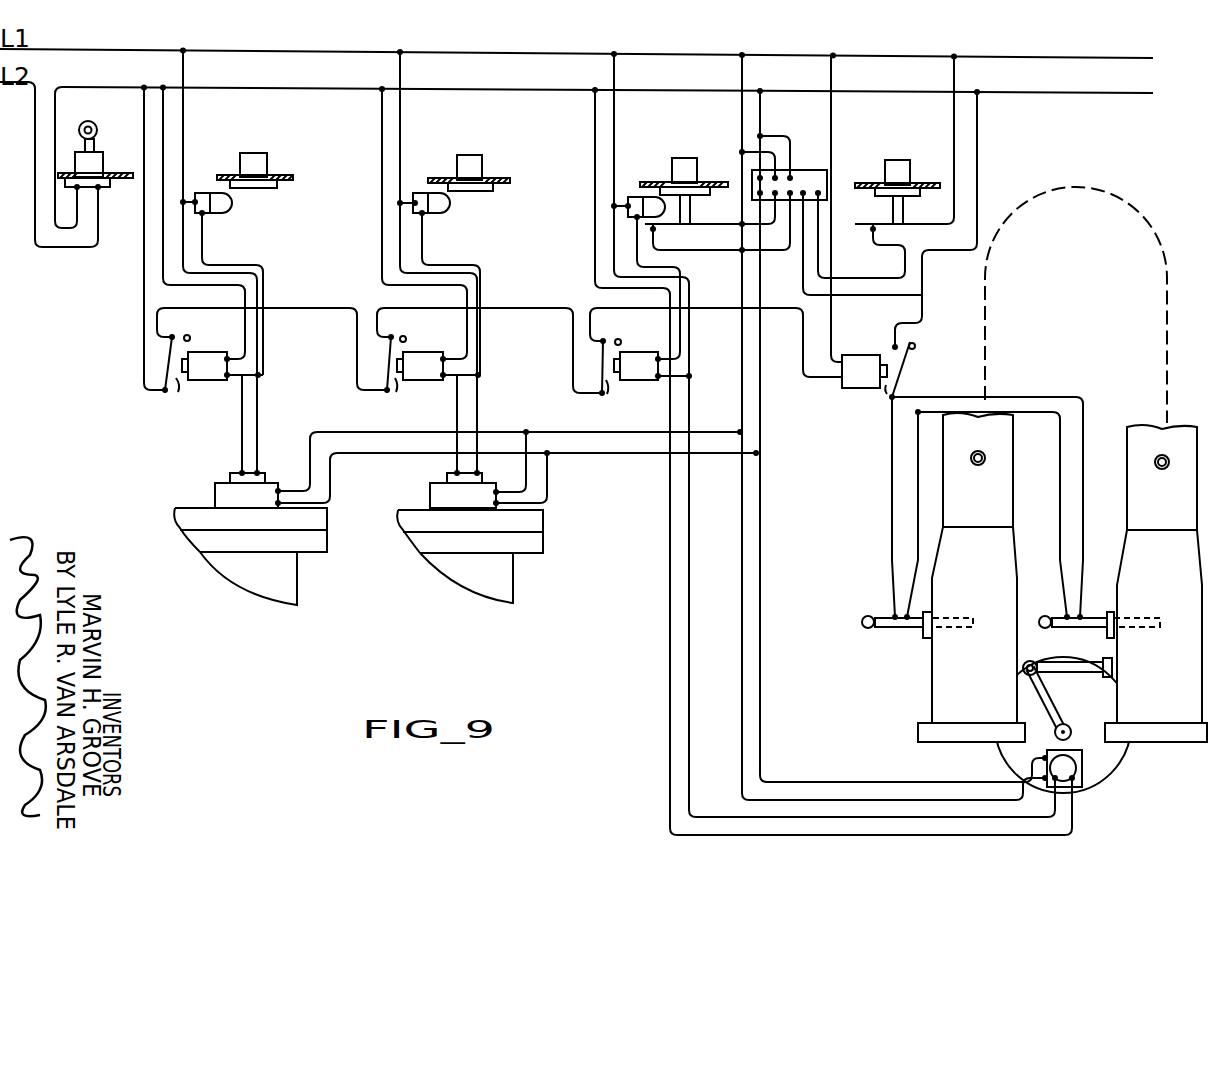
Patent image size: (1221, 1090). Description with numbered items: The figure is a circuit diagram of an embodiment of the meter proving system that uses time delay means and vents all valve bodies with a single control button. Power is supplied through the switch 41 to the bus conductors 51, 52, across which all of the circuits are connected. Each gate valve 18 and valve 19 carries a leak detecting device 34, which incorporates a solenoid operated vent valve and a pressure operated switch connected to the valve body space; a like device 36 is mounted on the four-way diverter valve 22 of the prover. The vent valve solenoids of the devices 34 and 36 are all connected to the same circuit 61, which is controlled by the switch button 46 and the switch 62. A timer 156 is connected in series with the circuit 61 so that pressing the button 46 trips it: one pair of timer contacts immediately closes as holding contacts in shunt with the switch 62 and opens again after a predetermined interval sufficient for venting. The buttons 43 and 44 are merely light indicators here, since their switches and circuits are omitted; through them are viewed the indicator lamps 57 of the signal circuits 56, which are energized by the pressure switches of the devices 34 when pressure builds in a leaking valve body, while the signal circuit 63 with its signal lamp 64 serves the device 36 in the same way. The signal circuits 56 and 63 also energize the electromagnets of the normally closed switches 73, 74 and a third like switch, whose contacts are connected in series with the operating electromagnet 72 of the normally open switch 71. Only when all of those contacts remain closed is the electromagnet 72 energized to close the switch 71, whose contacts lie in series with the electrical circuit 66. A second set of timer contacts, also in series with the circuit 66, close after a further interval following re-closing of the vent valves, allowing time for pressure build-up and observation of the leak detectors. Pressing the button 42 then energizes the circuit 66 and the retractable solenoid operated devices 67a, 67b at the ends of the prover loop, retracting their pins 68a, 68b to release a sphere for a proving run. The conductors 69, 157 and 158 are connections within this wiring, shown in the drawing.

The gate valve 18 is at (297, 591).
The valve 19 is at (513, 585).
The four-way diverter valve 22 is at (1102, 757).
The leak detecting device 34 is at (217, 495).
The leak detecting device 36 is at (1073, 780).
The switch 41 is at (100, 155).
The button 42 is at (900, 165).
The switch button 43 is at (260, 160).
The button 44 is at (478, 162).
The switch button 46 is at (688, 165).
The bus conductor 51 is at (576, 49).
The bus conductor 52 is at (576, 159).
The circuit 56 is at (258, 333).
The indicator lamp 57 is at (205, 213).
The circuit 61 is at (748, 515).
The switch 62 is at (680, 238).
The signal circuit 63 is at (680, 525).
The signal lamp 64 is at (632, 193).
The electrical circuit 66 is at (905, 418).
The retractable solenoid operated device 67a is at (898, 632).
The retractable solenoid operated device 67b is at (1052, 628).
The pin 68a is at (952, 632).
The pin 68b is at (1138, 632).
The conductor 69 is at (893, 240).
The normally open switch 71 is at (886, 381).
The operating electromagnet 72 is at (853, 388).
The normally closed electromagnetic switch 73 is at (265, 259).
The normally closed electromagnetic switch 74 is at (489, 369).
The timer 156 is at (808, 170).
The conductor 157 is at (813, 265).
The conductor 158 is at (855, 296).